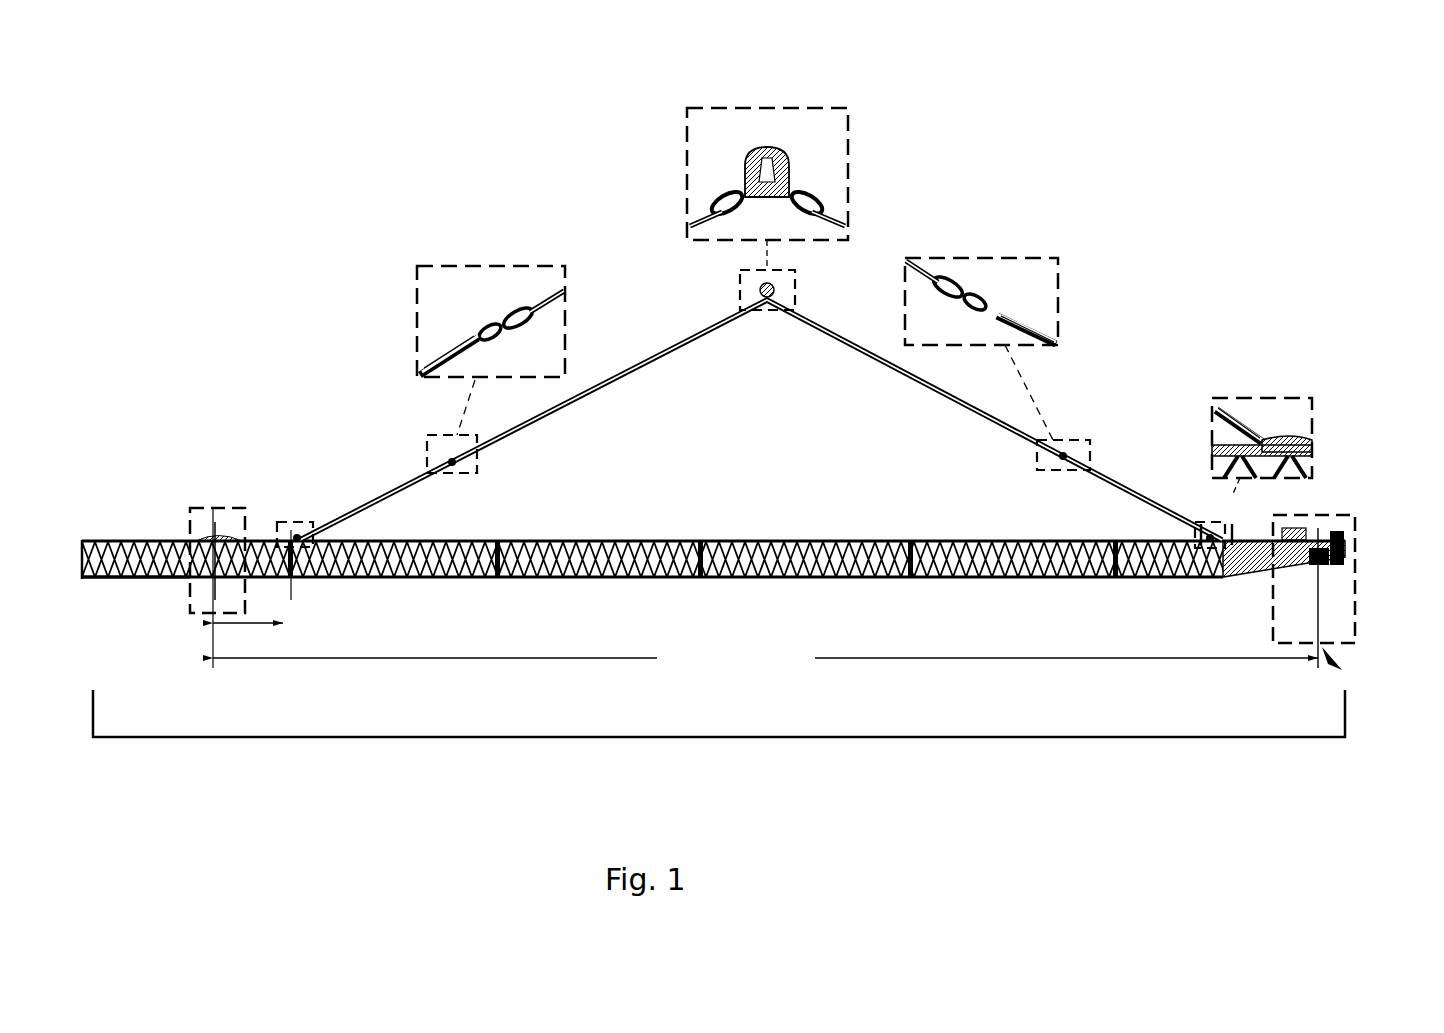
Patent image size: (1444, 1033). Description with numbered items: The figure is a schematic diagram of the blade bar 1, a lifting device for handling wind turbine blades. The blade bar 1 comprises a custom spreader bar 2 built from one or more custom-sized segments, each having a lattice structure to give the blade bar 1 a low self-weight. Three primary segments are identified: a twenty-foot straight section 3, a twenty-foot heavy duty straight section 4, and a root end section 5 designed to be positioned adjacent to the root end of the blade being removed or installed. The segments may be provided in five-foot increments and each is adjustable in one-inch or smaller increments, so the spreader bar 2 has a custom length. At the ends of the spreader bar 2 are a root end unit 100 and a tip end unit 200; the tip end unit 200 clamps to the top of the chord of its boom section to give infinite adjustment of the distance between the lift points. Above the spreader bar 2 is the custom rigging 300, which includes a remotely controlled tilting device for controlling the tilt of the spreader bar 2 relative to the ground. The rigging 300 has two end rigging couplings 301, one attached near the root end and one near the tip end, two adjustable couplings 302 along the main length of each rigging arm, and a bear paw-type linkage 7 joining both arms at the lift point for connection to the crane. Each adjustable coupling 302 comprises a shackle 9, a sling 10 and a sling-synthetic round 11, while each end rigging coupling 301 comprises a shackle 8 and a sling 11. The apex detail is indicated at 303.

The blade bar 1 is at (273, 337).
The custom spreader bar 2 is at (719, 650).
The straight section 3 is at (655, 580).
The heavy duty straight section 4 is at (152, 578).
The root end section 5 is at (1170, 580).
The bear paw-type linkage 7 is at (757, 150).
The shackle 8 is at (1268, 440).
The shackle 9 is at (742, 195).
The sling 10 is at (700, 210).
The sling-synthetic round 11 is at (432, 345).
The root end unit 100 is at (1352, 512).
The tip end unit 200 is at (217, 503).
The custom rigging 300 is at (667, 343).
The end rigging coupling 301 is at (306, 519).
The adjustable coupling 302 is at (427, 433).
The apex support 303 is at (738, 288).